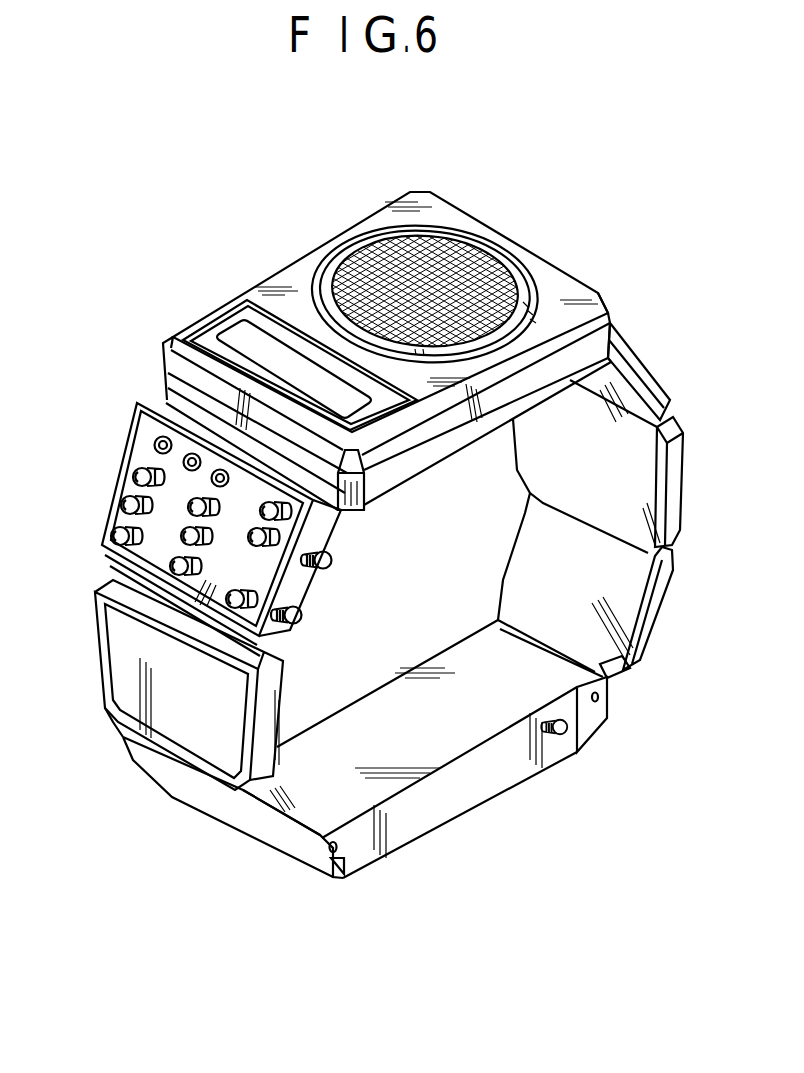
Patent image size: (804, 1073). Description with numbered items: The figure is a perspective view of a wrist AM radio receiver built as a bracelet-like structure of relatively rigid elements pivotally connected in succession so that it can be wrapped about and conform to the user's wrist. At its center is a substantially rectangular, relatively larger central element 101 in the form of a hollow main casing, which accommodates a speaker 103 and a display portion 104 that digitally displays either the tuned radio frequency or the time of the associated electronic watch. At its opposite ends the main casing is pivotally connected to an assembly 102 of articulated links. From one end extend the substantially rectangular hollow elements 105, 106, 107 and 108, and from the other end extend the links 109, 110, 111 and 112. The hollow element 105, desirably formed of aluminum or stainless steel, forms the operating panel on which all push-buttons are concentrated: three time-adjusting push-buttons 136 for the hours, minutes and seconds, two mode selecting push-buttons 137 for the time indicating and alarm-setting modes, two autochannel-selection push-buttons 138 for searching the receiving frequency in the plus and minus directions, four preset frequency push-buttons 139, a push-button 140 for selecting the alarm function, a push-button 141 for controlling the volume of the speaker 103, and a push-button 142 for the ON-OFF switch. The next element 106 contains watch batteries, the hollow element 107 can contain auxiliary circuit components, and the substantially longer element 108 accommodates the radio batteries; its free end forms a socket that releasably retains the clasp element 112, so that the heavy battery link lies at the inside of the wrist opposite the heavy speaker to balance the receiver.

The central element 101 is at (305, 263).
The assembly of articulated elements or links 102 is at (163, 825).
The speaker 103 is at (378, 247).
The display portion 104 is at (230, 332).
The hollow element or link 105 is at (118, 526).
The element 106 is at (107, 660).
The hollow element 107 is at (271, 832).
The hollow element 108 is at (508, 770).
The link or rigid element 109 is at (640, 372).
The link or rigid element 110 is at (682, 455).
The link or rigid element 111 is at (523, 545).
The element 112 is at (600, 712).
The time-adjusting push-buttons 136 is at (218, 469).
The mode selecting push-buttons 137 is at (249, 537).
The autochannel-selection push-buttons 138 is at (170, 566).
The push keys 139 is at (182, 531).
The push-button 140 is at (332, 562).
The push-button 141 is at (302, 616).
The push-button 142 is at (236, 593).